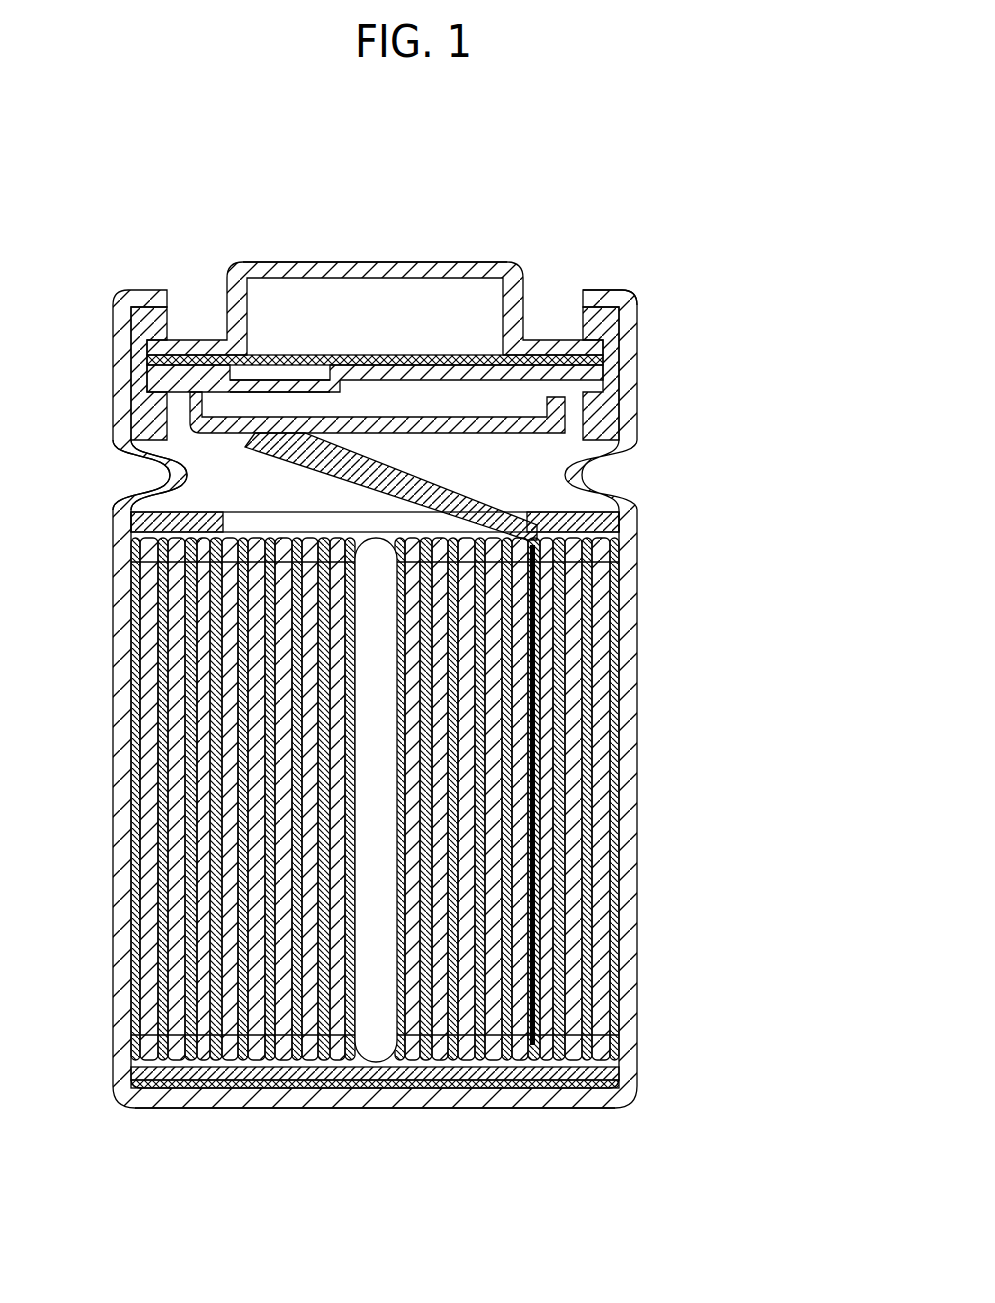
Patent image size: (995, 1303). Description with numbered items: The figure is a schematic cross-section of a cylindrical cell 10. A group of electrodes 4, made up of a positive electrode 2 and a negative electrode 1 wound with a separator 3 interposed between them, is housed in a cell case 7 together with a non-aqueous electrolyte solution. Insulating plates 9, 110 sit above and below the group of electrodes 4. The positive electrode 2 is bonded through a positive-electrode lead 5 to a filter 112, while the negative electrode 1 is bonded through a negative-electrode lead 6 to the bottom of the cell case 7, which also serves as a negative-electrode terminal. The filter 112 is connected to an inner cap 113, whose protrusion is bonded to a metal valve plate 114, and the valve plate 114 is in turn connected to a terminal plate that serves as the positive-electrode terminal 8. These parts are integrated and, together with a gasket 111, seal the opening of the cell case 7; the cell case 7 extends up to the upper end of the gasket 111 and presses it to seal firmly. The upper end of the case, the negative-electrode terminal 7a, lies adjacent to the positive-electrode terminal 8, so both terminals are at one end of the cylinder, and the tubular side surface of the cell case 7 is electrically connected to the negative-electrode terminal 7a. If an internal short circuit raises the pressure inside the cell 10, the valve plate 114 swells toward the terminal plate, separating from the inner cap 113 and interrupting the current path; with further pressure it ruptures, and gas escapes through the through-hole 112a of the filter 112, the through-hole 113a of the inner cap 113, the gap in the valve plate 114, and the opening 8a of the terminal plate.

The cell 10 is at (413, 657).
The cell case 7 is at (114, 710).
The negative-electrode terminal 7a is at (603, 293).
The positive-electrode lead 5 is at (150, 480).
The negative-electrode lead 6 is at (400, 1108).
The positive-electrode terminal 8 is at (461, 262).
The opening 8a is at (375, 265).
The insulating plate 9 is at (620, 520).
The insulating plate 110 is at (615, 1075).
The gasket 111 is at (606, 318).
The filter 112 is at (582, 420).
The through-hole 112a is at (378, 432).
The inner cap 113 is at (333, 372).
The through-hole 113a is at (290, 385).
The valve plate 114 is at (262, 348).
The group of electrodes 4 is at (448, 800).
The negative electrode 1 is at (605, 785).
The positive electrode 2 is at (578, 815).
The separator 3 is at (617, 748).